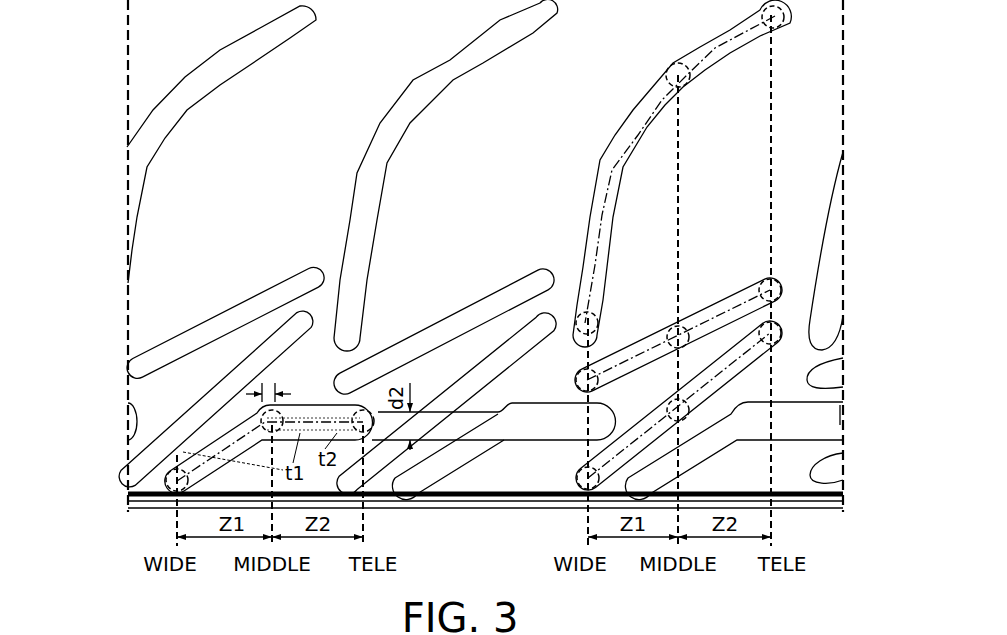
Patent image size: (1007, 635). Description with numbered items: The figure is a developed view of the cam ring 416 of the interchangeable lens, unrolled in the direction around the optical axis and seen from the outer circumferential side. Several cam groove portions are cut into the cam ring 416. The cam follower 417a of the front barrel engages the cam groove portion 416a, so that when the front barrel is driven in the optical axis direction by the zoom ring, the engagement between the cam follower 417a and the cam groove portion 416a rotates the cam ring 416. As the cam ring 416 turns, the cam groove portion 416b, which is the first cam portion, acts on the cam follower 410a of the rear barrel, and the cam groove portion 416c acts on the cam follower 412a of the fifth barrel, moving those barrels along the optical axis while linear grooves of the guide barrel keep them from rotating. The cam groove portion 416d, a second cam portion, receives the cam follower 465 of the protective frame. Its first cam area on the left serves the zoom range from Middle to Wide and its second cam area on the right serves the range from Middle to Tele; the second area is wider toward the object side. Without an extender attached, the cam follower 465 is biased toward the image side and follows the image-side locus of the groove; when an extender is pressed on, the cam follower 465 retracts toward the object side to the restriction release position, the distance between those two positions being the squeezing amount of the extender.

The cam ring 416 is at (187, 291).
The cam follower 465 is at (333, 345).
The cam groove portion 416a is at (615, 145).
The cam follower 417a is at (670, 72).
The cam groove portion 416b is at (713, 300).
The cam groove portion 416c is at (757, 340).
The cam follower 410a is at (673, 327).
The cam follower 412a is at (668, 406).
The cam groove portion 416d is at (307, 402).